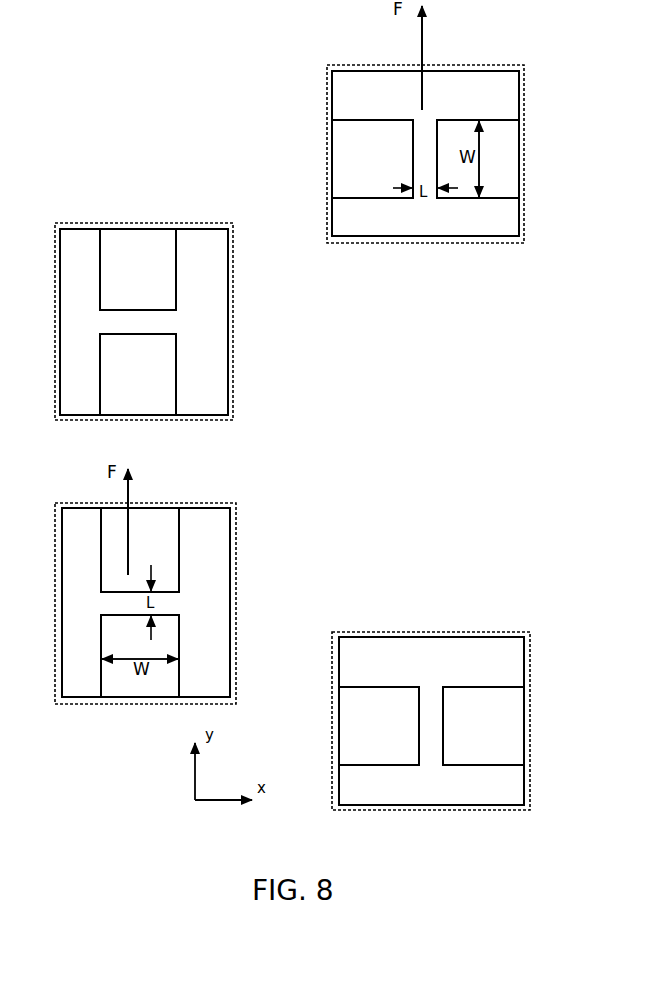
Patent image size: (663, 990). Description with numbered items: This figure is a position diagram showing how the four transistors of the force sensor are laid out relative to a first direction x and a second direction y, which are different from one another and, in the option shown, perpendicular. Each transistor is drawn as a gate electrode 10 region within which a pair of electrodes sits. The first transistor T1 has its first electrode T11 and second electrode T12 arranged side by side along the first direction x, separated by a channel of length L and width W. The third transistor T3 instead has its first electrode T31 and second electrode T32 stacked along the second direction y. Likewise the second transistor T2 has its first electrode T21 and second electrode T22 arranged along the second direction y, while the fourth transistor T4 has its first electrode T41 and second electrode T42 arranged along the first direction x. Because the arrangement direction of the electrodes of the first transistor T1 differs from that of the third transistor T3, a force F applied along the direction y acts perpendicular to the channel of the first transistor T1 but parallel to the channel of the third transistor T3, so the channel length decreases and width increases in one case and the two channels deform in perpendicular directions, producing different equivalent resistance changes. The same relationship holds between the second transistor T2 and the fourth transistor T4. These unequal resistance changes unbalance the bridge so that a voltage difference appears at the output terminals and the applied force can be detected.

The gate electrode 10 is at (426, 82).
The first transistor T1 is at (404, 246).
The first electrode of the first transistor T11 is at (340, 136).
The second electrode of the first transistor T12 is at (504, 146).
The second transistor T2 is at (58, 272).
The first electrode of the second transistor T21 is at (128, 232).
The second electrode of the second transistor T22 is at (152, 416).
The third transistor T3 is at (58, 530).
The first electrode of the third transistor T31 is at (148, 513).
The second electrode of the third transistor T32 is at (155, 685).
The fourth transistor T4 is at (513, 632).
The first electrode of the fourth transistor T41 is at (346, 704).
The second electrode of the fourth transistor T42 is at (506, 689).